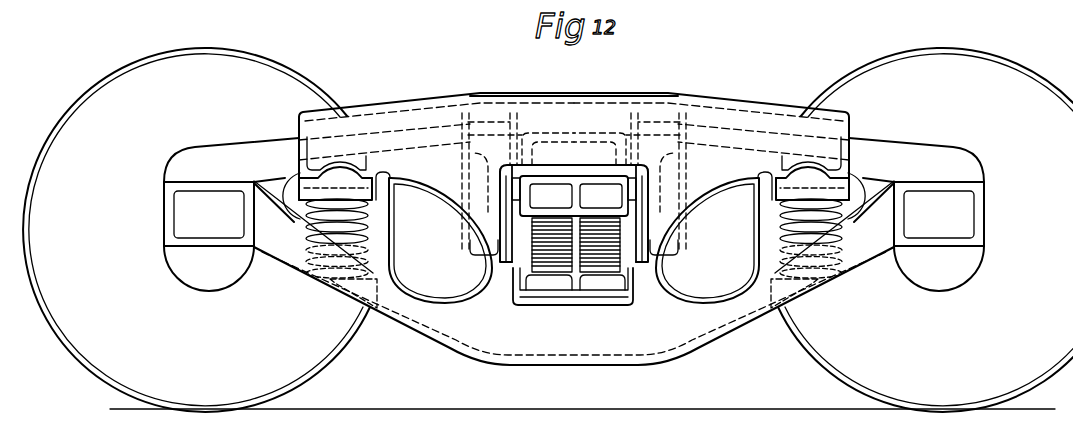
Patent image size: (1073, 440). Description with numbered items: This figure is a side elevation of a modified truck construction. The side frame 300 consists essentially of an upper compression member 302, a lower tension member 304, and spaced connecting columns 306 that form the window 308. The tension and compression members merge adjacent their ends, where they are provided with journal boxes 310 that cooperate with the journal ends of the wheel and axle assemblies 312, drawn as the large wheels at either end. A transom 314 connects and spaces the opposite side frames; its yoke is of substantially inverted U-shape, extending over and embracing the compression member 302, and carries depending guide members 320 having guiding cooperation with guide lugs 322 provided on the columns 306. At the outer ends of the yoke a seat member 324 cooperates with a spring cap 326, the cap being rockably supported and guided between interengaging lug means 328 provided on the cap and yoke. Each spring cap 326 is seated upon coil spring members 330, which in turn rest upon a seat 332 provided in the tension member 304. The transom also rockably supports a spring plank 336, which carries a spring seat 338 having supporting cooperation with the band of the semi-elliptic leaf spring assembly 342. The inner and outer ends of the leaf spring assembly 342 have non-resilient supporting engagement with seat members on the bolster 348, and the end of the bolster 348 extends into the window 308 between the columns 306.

The side frame 300 is at (452, 338).
The compression member 302 is at (264, 146).
The tension member 304 is at (405, 319).
The connecting columns 306 is at (658, 280).
The window 308 is at (522, 276).
The journal boxes 310 is at (162, 214).
The wheel and axle assemblies 312 is at (92, 107).
The transom 314 is at (576, 93).
The guide members 320 is at (512, 223).
The guide lugs 322 is at (642, 233).
The seat member 324 is at (344, 168).
The spring cap 326 is at (296, 220).
The lug means 328 is at (389, 197).
The coil spring members 330 is at (362, 230).
The seat 332 is at (360, 282).
The spring plank 336 is at (628, 304).
The spring seat 338 is at (598, 278).
The semi-elliptic leaf spring assembly 342 is at (592, 241).
The bolster 348 is at (594, 176).